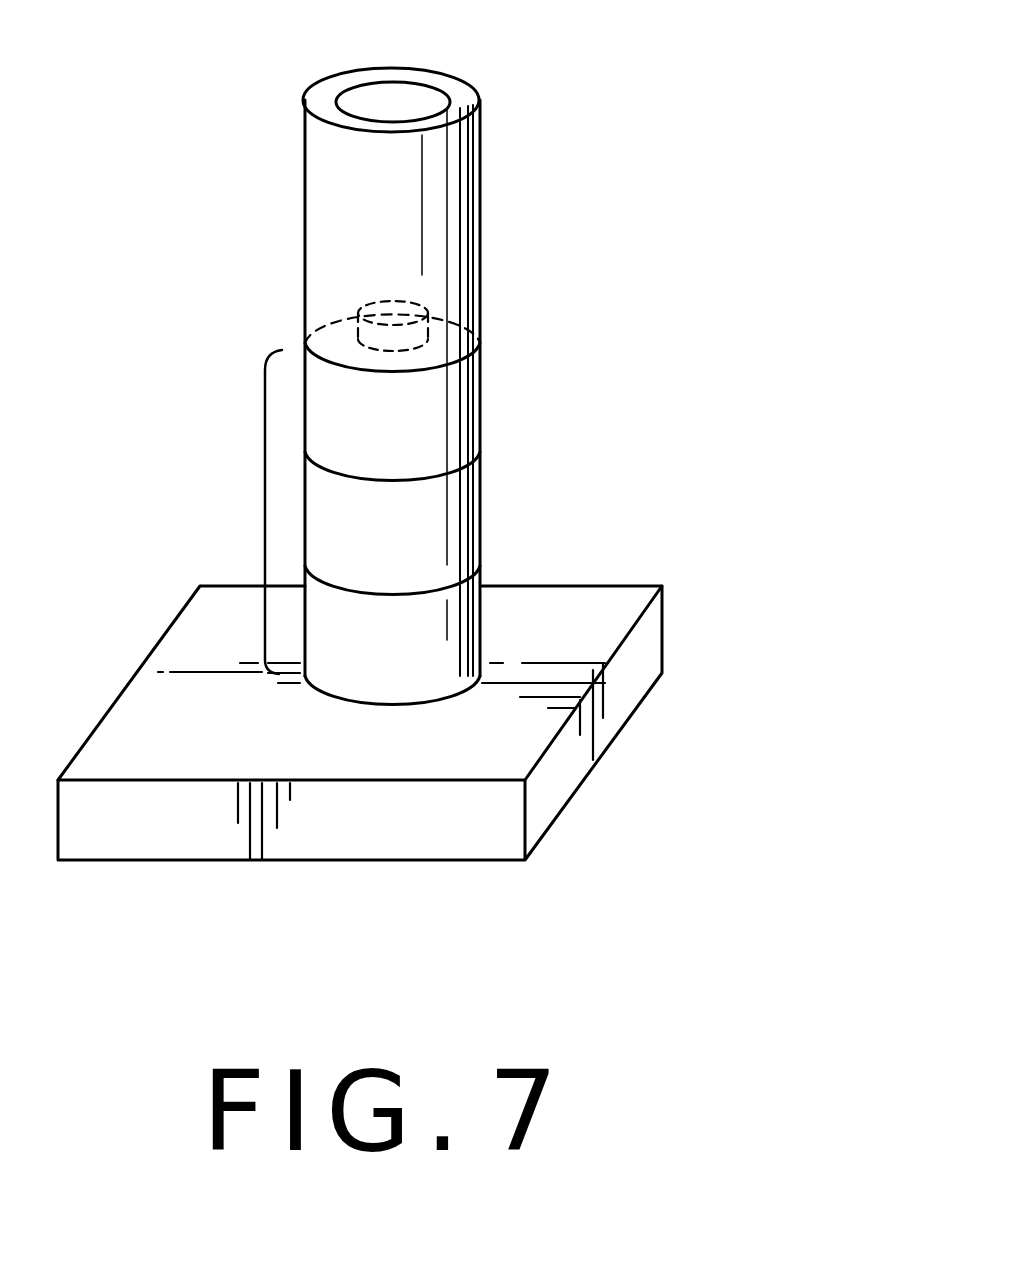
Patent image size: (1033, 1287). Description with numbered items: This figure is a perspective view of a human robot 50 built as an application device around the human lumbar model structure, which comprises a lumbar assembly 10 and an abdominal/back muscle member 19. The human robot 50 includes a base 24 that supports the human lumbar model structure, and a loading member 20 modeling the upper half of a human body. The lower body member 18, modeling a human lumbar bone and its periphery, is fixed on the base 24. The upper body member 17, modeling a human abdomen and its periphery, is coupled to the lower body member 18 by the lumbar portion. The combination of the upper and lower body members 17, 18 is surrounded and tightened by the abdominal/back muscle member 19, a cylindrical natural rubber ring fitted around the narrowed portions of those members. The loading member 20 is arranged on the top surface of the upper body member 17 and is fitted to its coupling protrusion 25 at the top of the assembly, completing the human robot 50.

The human robot 50 is at (702, 213).
The base 24 is at (657, 643).
The lumbar assembly 10 is at (255, 498).
The loading member 20 is at (481, 151).
The coupling protrusion 25 is at (396, 304).
The upper body member 17 is at (483, 393).
The abdominal/back muscle member 19 is at (483, 513).
The lower body member 18 is at (483, 628).